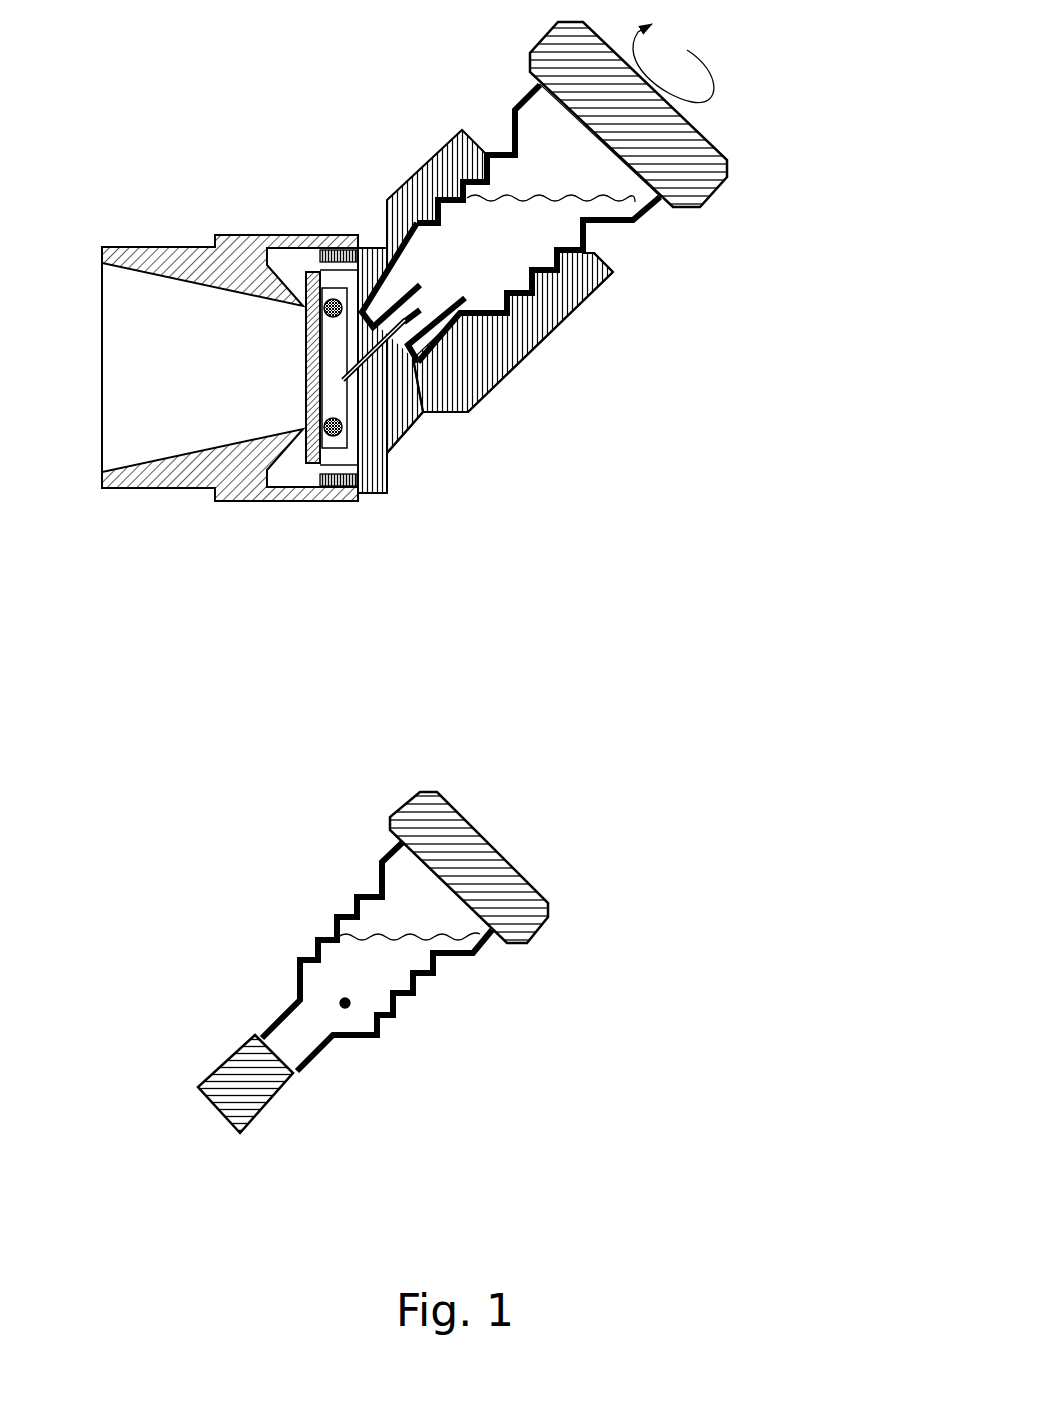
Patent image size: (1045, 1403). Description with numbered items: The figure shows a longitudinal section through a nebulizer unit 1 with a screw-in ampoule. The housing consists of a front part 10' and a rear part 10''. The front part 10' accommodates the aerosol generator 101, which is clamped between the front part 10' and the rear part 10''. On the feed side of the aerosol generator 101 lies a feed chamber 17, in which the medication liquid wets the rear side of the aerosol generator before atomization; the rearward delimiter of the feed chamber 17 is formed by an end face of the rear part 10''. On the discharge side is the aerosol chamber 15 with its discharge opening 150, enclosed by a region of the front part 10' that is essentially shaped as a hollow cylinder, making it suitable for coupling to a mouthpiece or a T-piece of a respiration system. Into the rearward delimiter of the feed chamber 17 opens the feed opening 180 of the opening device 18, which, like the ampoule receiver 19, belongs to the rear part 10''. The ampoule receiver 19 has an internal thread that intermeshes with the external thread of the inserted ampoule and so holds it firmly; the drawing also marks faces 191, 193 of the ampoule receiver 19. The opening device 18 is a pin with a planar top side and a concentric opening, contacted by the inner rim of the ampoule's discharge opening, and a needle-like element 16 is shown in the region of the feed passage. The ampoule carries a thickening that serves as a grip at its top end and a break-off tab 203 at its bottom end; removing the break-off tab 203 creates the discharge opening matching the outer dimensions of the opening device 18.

The spray device 1 is at (245, 120).
The front part 10' is at (230, 348).
The rear part 10'' is at (497, 289).
The aerosol chamber 15 is at (126, 330).
The discharge opening 150 is at (104, 408).
The aerosol generator 101 is at (304, 401).
The feed chamber 17 is at (344, 364).
The opening device 18 is at (411, 297).
The feed opening 180 is at (414, 317).
The needle 16 is at (380, 380).
The ampoule receiver 19 is at (534, 320).
The upper face of lower body part 191 is at (580, 280).
The lower face of lower body part 193 is at (468, 365).
The break-off tab 203 is at (230, 1092).